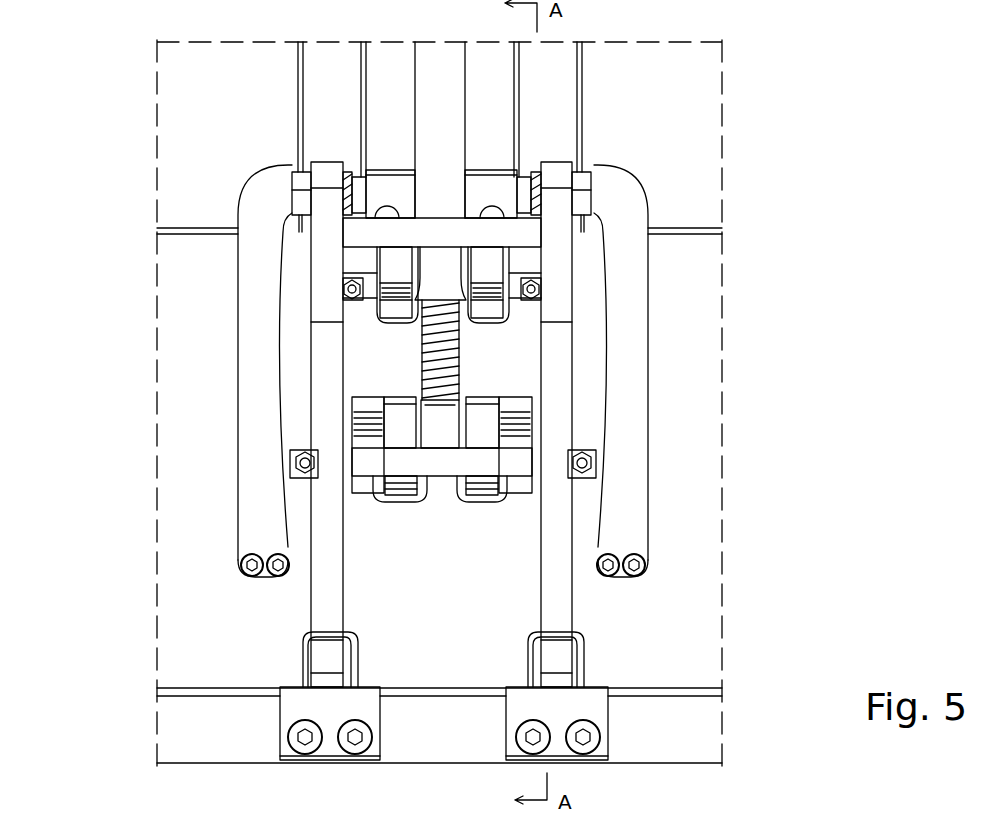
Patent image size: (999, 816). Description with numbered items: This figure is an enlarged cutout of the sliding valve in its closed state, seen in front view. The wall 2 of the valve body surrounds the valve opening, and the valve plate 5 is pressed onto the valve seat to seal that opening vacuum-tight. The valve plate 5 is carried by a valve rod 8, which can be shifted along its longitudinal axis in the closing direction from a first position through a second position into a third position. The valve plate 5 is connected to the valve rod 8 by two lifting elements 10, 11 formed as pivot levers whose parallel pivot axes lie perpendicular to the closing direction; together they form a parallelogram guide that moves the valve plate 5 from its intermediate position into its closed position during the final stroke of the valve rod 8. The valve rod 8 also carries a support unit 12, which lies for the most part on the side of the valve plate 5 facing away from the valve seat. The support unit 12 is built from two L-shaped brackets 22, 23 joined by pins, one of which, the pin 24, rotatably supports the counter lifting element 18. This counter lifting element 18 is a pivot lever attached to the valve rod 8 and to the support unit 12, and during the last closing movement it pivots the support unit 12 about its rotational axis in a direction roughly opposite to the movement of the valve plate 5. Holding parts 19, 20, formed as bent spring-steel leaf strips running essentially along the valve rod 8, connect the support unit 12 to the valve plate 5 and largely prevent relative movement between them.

The wall 2 is at (690, 108).
The valve plate 5 is at (675, 285).
The valve rod 8 is at (440, 105).
The lifting element 10 is at (790, 328).
The lifting element 11 is at (790, 240).
The support unit 12 is at (295, 332).
The counter lifting element 18 is at (790, 388).
The holding part 19 is at (630, 440).
The holding part 20 is at (258, 380).
The L-shaped bracket 22 is at (563, 597).
The L-shaped bracket 23 is at (330, 596).
The pin 24 is at (478, 468).